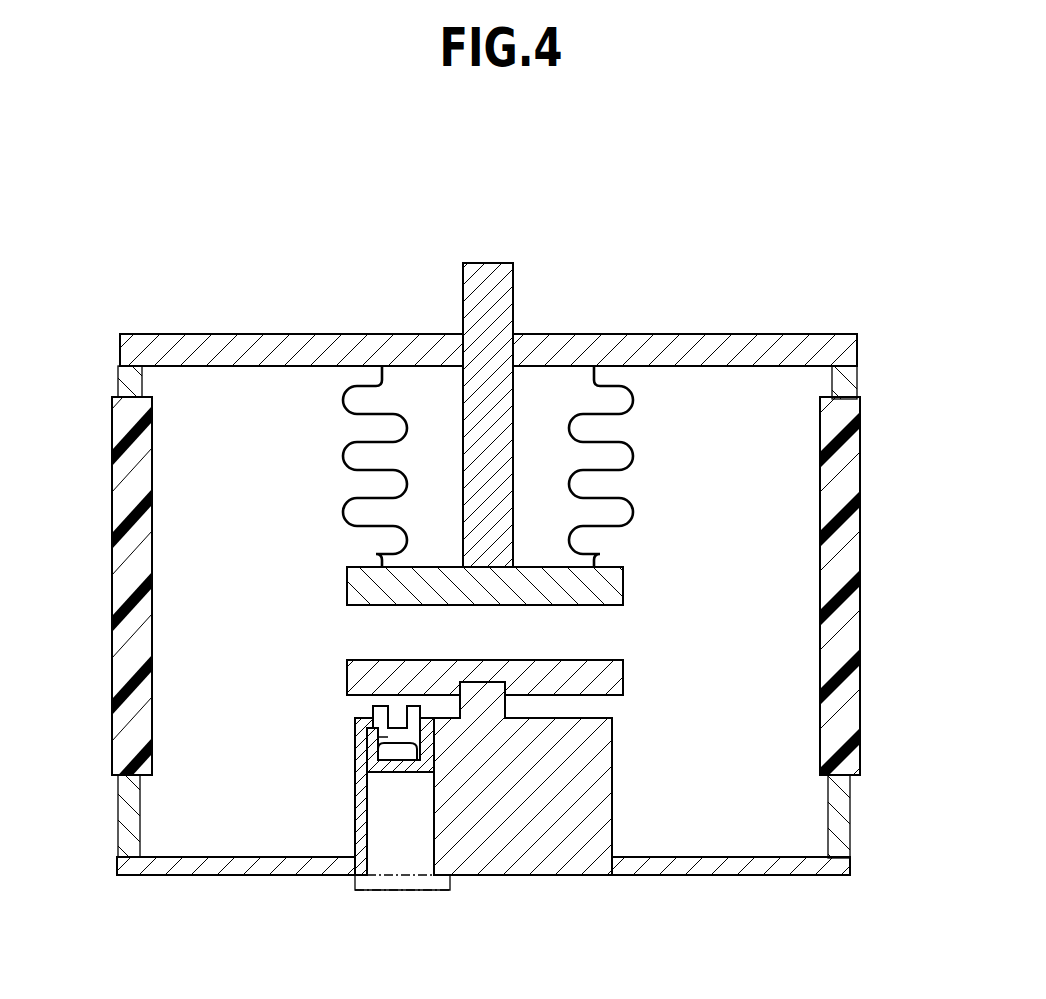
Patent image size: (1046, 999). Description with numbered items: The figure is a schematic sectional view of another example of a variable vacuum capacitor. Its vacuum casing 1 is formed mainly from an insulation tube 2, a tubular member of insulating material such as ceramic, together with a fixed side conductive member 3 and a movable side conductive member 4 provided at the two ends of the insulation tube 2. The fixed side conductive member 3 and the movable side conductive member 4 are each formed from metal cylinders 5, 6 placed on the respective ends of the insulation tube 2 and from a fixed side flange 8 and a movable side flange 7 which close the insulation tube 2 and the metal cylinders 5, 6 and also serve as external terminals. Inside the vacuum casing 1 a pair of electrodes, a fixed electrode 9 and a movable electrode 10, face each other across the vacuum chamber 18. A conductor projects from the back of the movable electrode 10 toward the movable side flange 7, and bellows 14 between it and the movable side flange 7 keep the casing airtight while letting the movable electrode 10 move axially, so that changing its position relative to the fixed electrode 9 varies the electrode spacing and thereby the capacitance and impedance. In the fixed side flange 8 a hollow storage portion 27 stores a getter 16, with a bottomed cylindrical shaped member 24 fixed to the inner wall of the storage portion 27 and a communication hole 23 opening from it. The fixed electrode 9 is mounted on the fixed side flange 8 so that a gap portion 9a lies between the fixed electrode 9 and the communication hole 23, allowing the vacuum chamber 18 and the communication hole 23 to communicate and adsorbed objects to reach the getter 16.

The vacuum casing 1 is at (97, 515).
The insulation tube 2 is at (120, 590).
The fixed side conductive member 3 is at (900, 947).
The movable side conductive member 4 is at (932, 256).
The metal cylinder 5 is at (853, 833).
The metal cylinder 6 is at (857, 382).
The movable side flange 7 is at (812, 334).
The fixed side flange 8 is at (797, 872).
The fixed electrode 9 is at (592, 660).
The gap portion 9a is at (367, 697).
The movable electrode 10 is at (580, 606).
The bellows 14 is at (635, 458).
The getter 16 is at (386, 753).
The vacuum chamber 18 is at (213, 410).
The communication hole 23 is at (393, 720).
The bottomed cylindrical shaped member 24 is at (392, 772).
The storage portion 27 is at (380, 738).